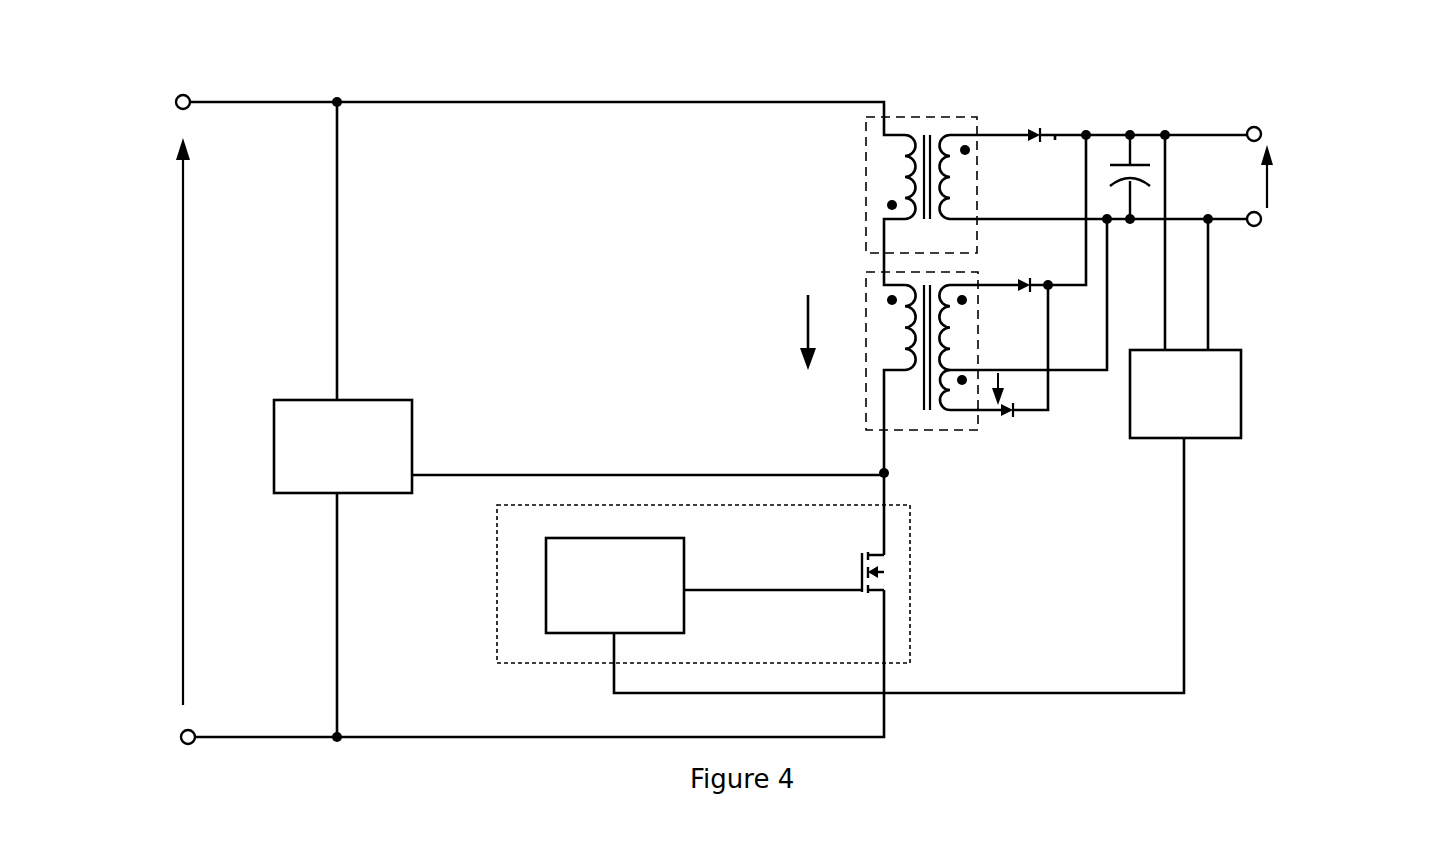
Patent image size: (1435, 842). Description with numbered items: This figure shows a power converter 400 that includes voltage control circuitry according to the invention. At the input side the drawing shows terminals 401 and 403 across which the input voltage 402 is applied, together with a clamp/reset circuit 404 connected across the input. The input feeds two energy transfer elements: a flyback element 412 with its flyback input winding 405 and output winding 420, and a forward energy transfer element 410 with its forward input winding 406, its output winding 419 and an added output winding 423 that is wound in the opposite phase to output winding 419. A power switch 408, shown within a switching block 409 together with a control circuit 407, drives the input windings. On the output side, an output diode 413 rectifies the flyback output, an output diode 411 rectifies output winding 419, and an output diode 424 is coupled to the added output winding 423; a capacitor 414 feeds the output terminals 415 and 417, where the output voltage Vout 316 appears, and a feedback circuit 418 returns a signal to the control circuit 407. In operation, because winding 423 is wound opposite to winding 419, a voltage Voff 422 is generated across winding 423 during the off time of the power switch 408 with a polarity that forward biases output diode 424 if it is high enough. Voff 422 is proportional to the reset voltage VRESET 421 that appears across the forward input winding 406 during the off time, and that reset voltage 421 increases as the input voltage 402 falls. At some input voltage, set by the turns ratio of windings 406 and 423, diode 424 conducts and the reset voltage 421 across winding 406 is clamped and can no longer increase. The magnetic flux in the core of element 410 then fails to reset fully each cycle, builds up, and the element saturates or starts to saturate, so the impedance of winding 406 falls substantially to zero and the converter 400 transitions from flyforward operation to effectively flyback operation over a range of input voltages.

The power converter 400 is at (303, 58).
The input terminal 401 is at (198, 113).
The input voltage 402 is at (155, 400).
The input terminal 403 is at (178, 737).
The clamp / reset circuit 404 is at (298, 397).
The flyback input winding 405 is at (903, 168).
The forward input winding 406 is at (903, 346).
The control circuit 407 is at (566, 635).
The power switch 408 is at (888, 590).
The switching module 409 is at (912, 520).
The forward energy transfer element 410 is at (920, 391).
The output diode 411 is at (1020, 282).
The first transformer 412 is at (896, 142).
The rectifier diode 413 is at (1036, 128).
The output capacitor 414 is at (1140, 154).
The output terminal 415 is at (1263, 126).
The output voltage Vout 316 is at (1348, 173).
The output terminal 417 is at (1267, 228).
The feedback circuit 418 is at (1213, 450).
The output winding 419 is at (952, 352).
The secondary winding of first transformer 420 is at (972, 135).
The reset voltage VRESET 421 is at (750, 322).
The voltage Voff 422 is at (1040, 385).
The output winding 423 is at (975, 398).
The output diode 424 is at (1055, 157).